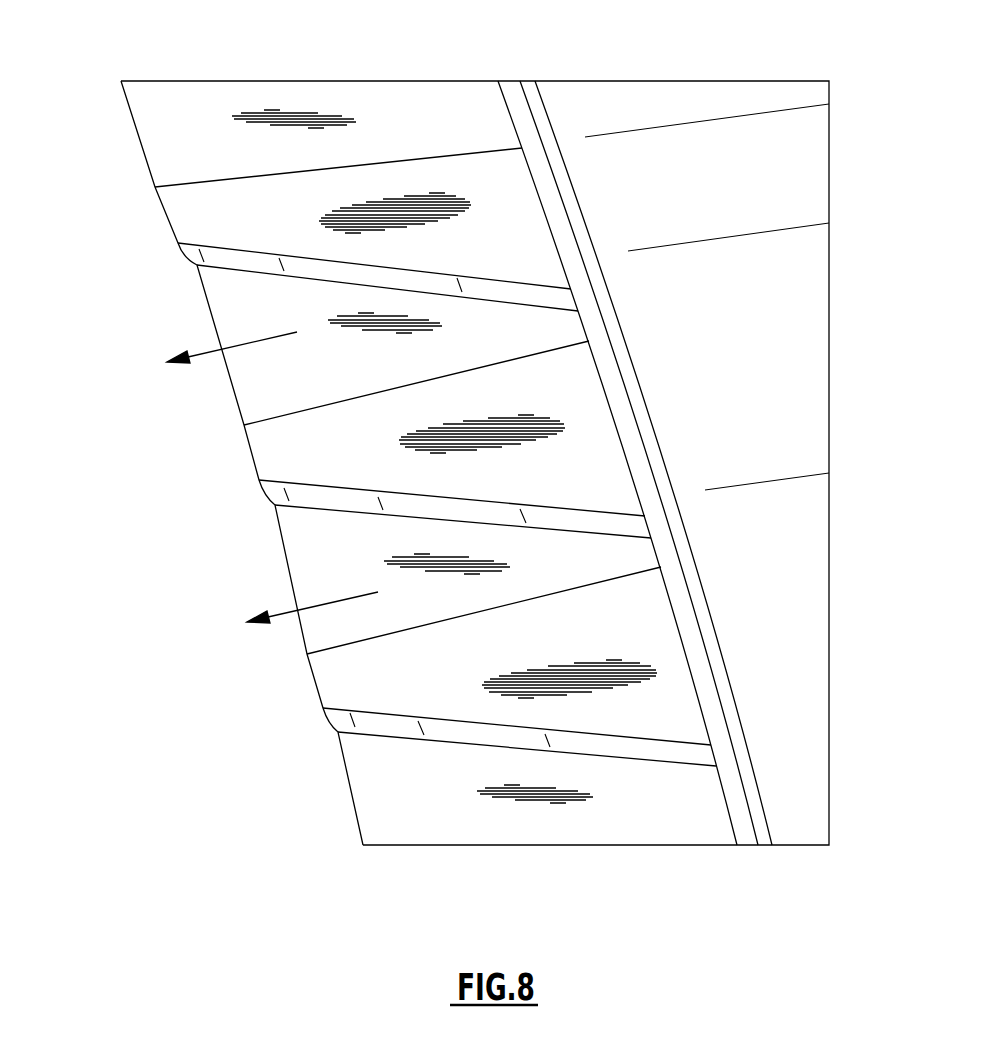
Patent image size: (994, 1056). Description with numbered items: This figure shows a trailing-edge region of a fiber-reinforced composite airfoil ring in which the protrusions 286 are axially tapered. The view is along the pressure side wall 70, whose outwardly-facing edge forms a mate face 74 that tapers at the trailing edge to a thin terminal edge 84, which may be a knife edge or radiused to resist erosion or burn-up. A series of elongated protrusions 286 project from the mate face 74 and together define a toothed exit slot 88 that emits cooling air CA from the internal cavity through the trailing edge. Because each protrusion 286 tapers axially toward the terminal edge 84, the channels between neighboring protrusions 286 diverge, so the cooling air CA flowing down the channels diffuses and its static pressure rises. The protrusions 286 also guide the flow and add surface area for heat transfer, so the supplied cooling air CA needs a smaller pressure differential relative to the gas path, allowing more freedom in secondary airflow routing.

The pressure side wall 70 is at (782, 405).
The mate face 74 is at (385, 118).
The terminal edge 84 is at (139, 137).
The toothed exit slot 88 is at (230, 301).
The protrusion 286 is at (287, 453).
The cooling air CA is at (212, 356).